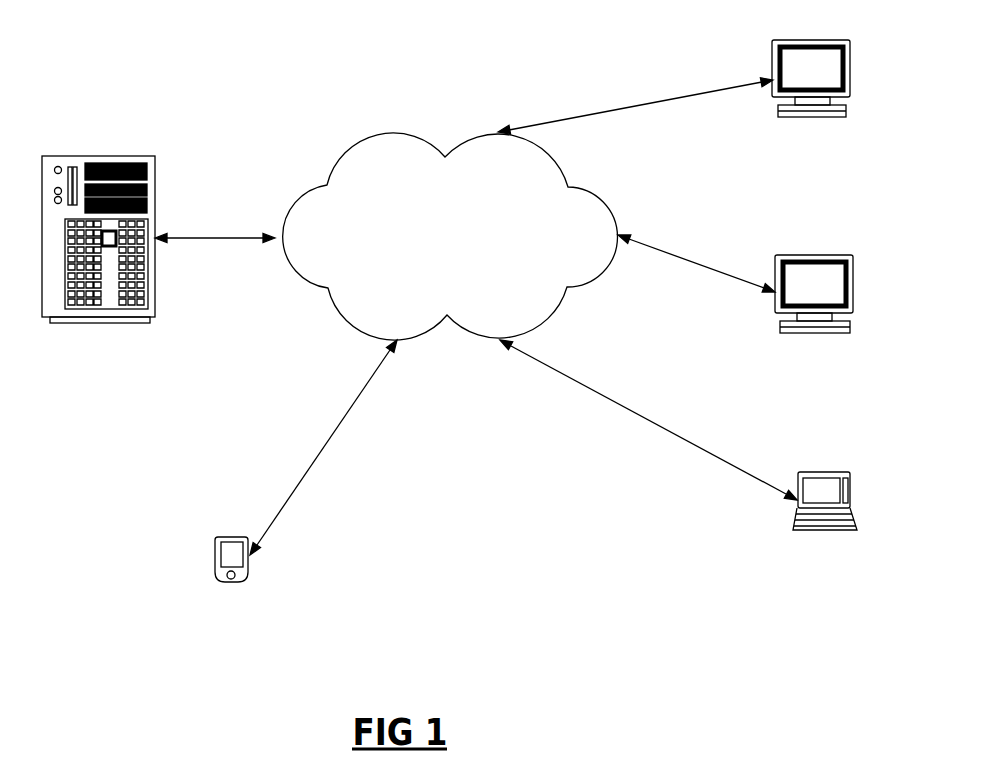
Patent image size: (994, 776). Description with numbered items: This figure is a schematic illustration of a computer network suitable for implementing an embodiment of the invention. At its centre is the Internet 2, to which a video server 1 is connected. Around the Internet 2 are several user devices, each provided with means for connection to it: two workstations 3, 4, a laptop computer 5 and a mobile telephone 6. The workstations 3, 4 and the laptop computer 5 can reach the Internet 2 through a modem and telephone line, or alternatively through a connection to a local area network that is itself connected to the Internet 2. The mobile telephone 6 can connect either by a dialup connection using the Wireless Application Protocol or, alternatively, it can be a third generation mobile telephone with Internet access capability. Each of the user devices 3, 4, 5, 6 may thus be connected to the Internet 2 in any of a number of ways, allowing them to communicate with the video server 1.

The video server 1 is at (100, 154).
The Internet 2 is at (445, 316).
The workstation 3 is at (850, 78).
The workstation 4 is at (853, 293).
The laptop computer 5 is at (850, 502).
The mobile telephone 6 is at (248, 577).